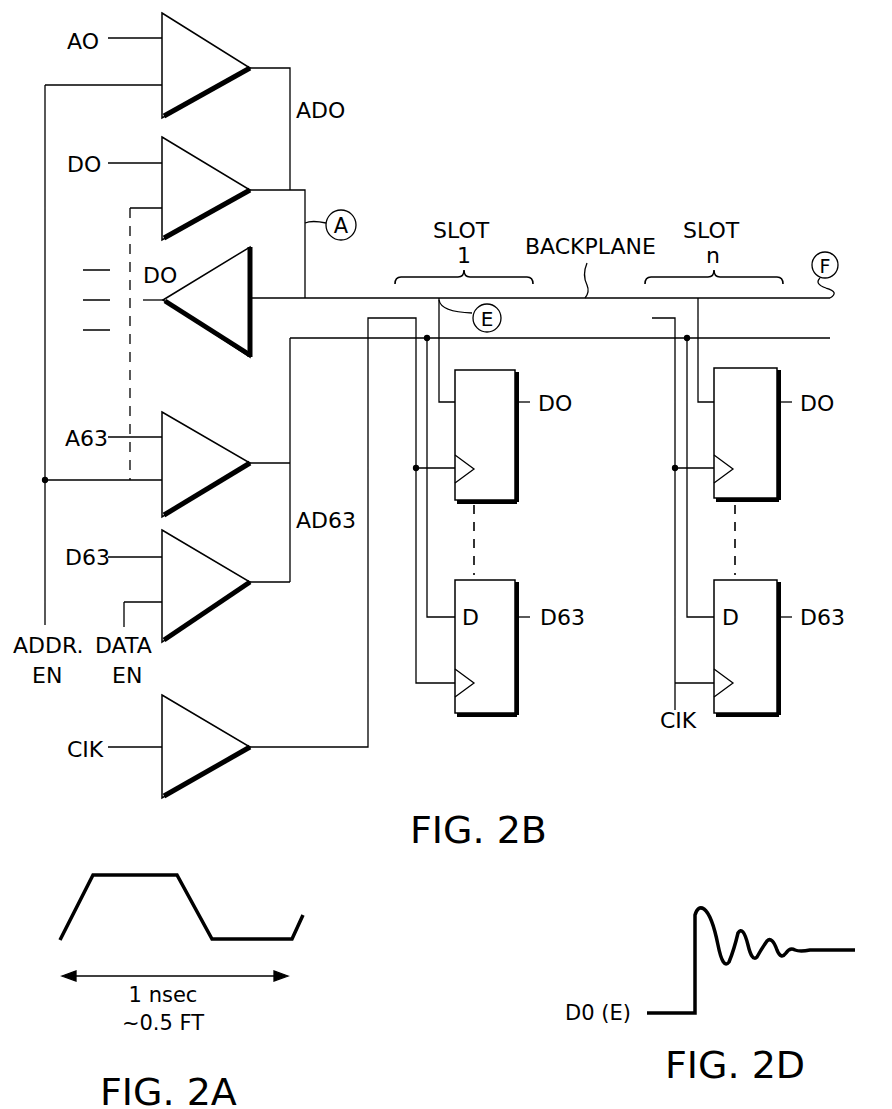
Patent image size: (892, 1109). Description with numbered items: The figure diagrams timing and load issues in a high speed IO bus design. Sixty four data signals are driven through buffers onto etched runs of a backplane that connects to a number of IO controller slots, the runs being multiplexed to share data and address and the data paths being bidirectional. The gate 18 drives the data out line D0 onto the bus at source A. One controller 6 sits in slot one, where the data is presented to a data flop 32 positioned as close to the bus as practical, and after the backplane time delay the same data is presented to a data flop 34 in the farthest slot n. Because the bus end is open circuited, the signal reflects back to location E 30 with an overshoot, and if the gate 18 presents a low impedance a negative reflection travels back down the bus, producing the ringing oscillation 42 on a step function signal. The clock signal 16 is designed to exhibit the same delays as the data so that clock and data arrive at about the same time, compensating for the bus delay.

In FIG. 2B, the gate 18 is at (204, 170).
In FIG. 2B, the location E 30 is at (201, 313).
In FIG. 2B, the clock signal 16 is at (268, 748).
In FIG. 2B, the data flop 32 is at (518, 449).
In FIG. 2B, the data flop 34 is at (780, 449).
In FIG. 2B, the controller 6 is at (580, 382).
In FIG. 2D, the ringing oscillation 42 is at (693, 918).